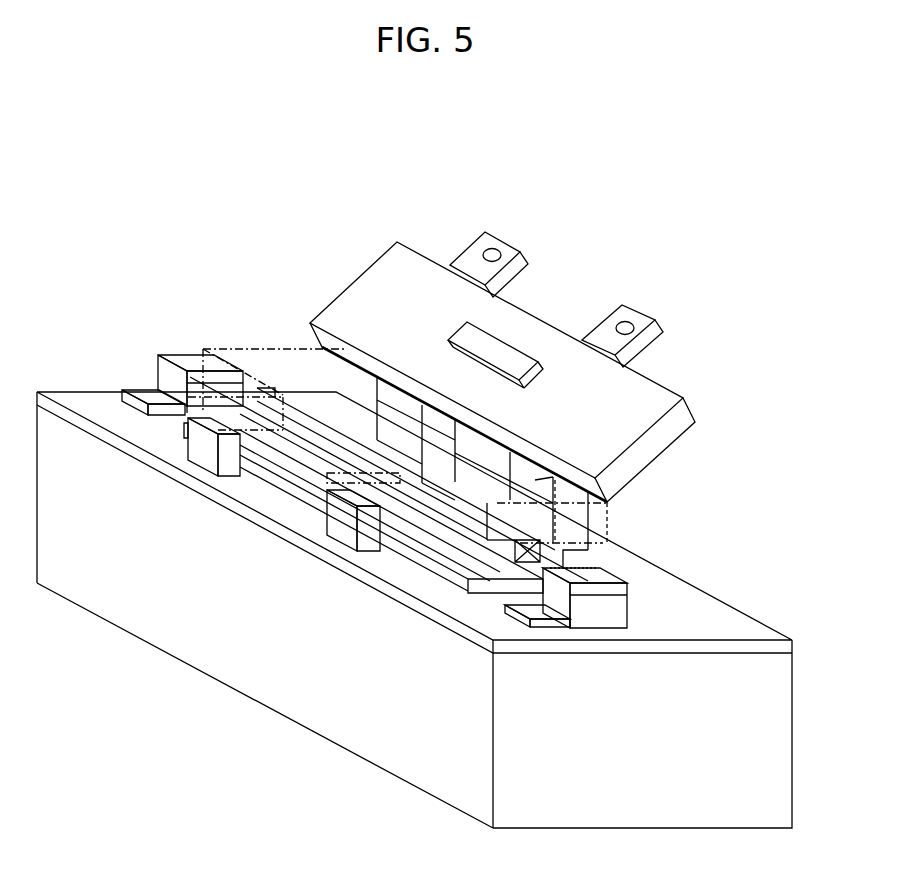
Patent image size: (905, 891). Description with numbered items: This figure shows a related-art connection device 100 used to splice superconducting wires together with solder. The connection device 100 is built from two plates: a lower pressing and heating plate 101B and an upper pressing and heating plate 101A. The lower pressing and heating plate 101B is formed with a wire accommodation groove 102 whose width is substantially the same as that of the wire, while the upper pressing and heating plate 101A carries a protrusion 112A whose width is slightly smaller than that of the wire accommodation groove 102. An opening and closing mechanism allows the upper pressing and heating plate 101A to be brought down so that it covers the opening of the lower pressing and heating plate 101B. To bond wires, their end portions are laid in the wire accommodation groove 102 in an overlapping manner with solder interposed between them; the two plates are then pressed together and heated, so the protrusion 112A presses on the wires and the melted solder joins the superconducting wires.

The connection device 100 is at (203, 160).
The upper pressing and heating plate 101A is at (648, 388).
The lower pressing and heating plate 101B is at (457, 545).
The wire accommodation groove 102 is at (560, 548).
The protrusion 112A is at (522, 353).